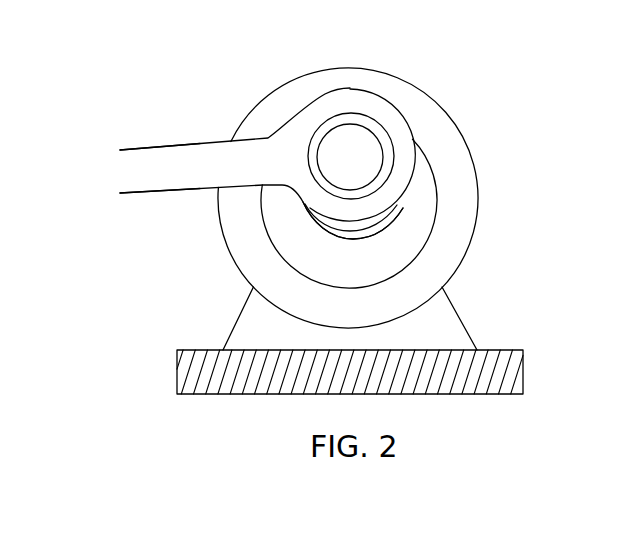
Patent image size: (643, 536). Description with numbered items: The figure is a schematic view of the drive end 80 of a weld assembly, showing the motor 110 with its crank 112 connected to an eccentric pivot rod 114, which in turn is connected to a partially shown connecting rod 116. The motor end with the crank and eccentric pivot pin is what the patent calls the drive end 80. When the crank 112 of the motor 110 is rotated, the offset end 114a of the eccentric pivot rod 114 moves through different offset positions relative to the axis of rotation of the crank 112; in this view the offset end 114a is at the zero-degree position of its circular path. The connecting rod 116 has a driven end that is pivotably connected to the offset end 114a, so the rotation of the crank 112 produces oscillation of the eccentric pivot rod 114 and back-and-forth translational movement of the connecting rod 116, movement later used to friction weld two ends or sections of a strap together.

The drive end 80 is at (498, 213).
The motor 110 is at (457, 118).
The crank 112 is at (350, 228).
The eccentric pivot rod 114 is at (338, 150).
The offset end 114a is at (340, 150).
The connecting rod 116 is at (177, 175).